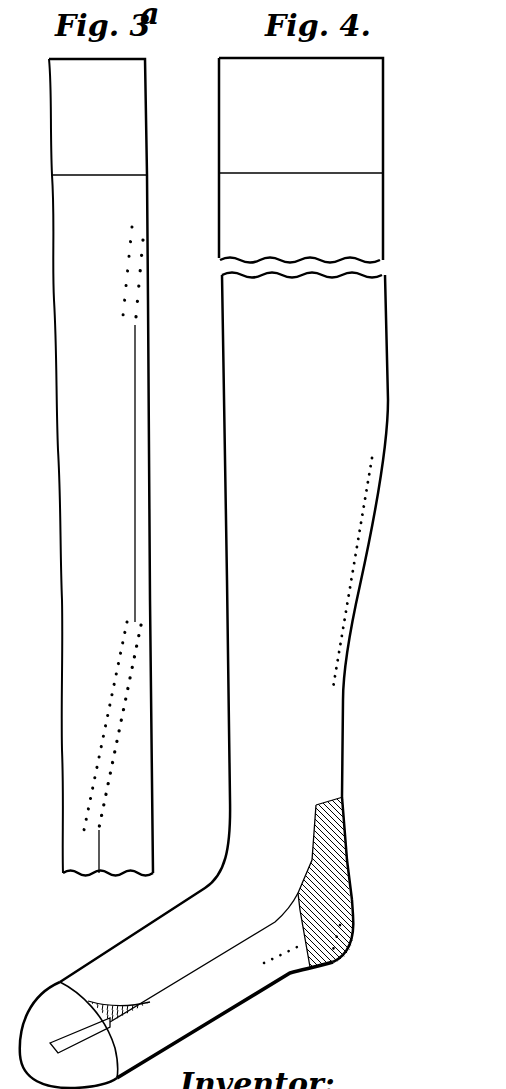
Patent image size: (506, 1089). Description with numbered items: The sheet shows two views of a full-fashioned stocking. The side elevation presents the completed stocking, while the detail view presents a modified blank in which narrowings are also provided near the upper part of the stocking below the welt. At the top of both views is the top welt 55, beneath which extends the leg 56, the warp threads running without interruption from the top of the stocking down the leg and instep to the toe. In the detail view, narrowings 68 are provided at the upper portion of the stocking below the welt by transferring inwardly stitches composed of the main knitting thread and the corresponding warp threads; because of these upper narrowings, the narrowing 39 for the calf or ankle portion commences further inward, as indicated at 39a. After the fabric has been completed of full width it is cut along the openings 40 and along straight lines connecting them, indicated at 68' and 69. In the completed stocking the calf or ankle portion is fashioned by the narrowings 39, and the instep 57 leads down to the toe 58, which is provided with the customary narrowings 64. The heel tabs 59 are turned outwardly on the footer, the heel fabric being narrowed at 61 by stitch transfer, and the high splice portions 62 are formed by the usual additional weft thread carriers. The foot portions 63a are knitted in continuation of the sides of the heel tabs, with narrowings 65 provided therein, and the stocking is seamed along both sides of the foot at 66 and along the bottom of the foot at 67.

In FIG. 3A, the top welt 55 is at (130, 88).
In FIG. 4, the top welt 55 is at (233, 123).
In FIG. 3A, the leg 56 is at (76, 525).
In FIG. 4, the leg 56 is at (233, 355).
In FIG. 3A, the narrowings 68 is at (107, 271).
In FIG. 3A, the openings 40 is at (147, 259).
In FIG. 3A, the straight cutting line 68' is at (165, 473).
In FIG. 3A, the commencement of calf narrowing 39a is at (125, 648).
In FIG. 3A, the straight cutting line 69 is at (100, 849).
In FIG. 4, the narrowings 39 is at (356, 554).
In FIG. 4, the instep 57 is at (172, 920).
In FIG. 4, the toe 58 is at (50, 1006).
In FIG. 4, the side seams of the foot 66 is at (181, 986).
In FIG. 4, the toe narrowings 64 is at (80, 1034).
In FIG. 4, the bottom seam of the foot 67 is at (254, 995).
In FIG. 4, the foot portions 63a is at (212, 1002).
In FIG. 4, the foot narrowings 65 is at (297, 965).
In FIG. 4, the heel tabs 59 is at (330, 903).
In FIG. 4, the high splice portions 62 is at (330, 848).
In FIG. 4, the heel narrowings 61 is at (354, 940).